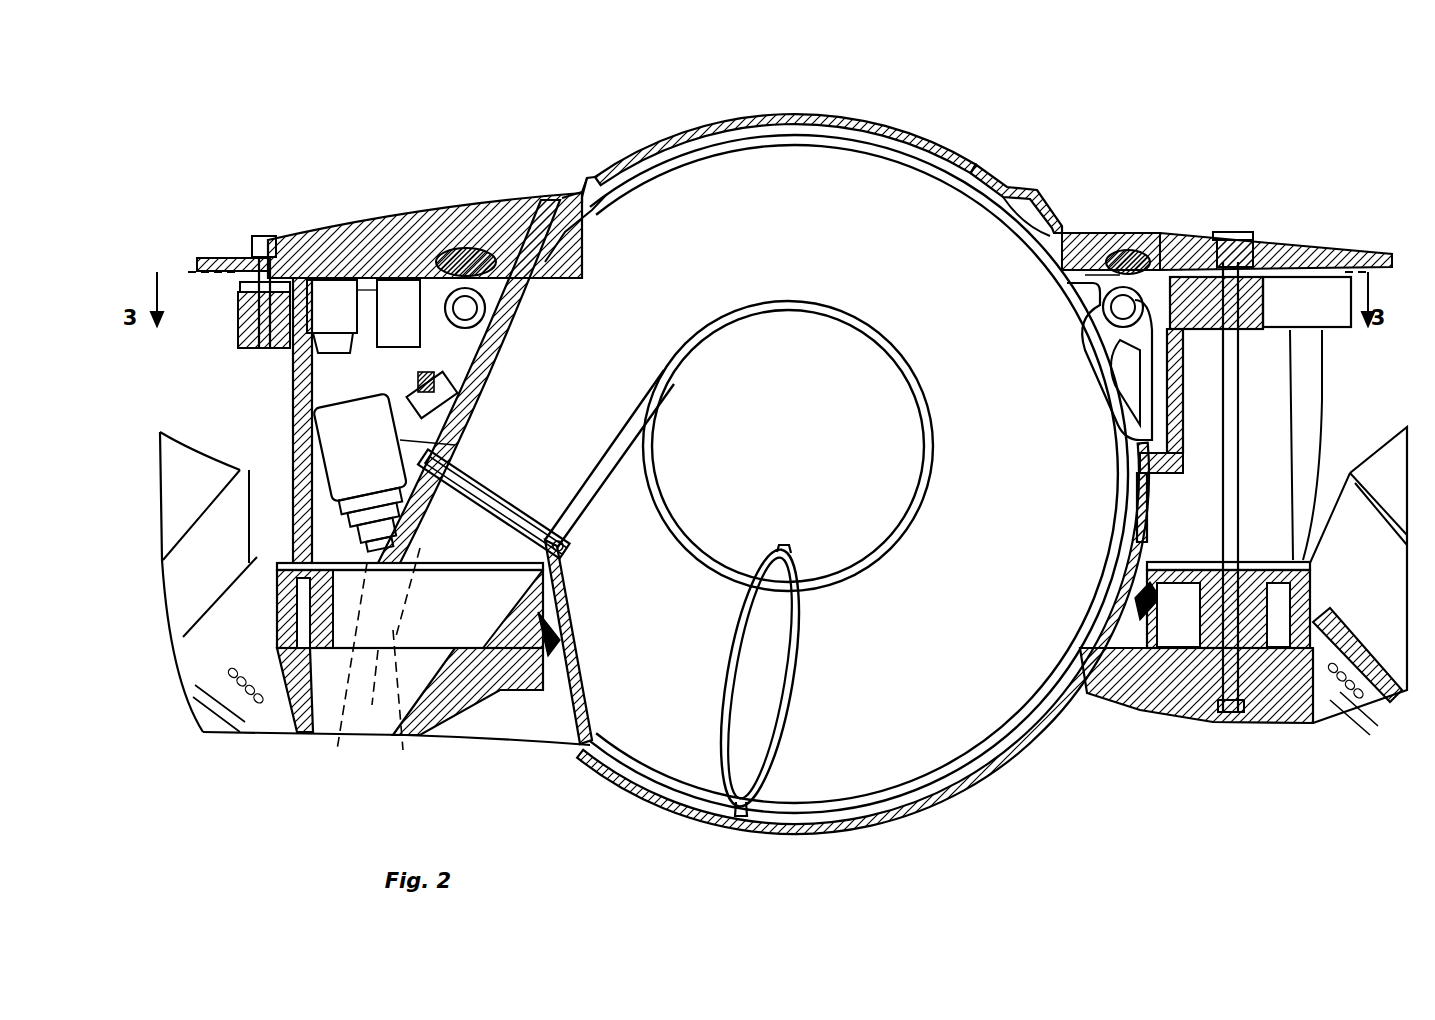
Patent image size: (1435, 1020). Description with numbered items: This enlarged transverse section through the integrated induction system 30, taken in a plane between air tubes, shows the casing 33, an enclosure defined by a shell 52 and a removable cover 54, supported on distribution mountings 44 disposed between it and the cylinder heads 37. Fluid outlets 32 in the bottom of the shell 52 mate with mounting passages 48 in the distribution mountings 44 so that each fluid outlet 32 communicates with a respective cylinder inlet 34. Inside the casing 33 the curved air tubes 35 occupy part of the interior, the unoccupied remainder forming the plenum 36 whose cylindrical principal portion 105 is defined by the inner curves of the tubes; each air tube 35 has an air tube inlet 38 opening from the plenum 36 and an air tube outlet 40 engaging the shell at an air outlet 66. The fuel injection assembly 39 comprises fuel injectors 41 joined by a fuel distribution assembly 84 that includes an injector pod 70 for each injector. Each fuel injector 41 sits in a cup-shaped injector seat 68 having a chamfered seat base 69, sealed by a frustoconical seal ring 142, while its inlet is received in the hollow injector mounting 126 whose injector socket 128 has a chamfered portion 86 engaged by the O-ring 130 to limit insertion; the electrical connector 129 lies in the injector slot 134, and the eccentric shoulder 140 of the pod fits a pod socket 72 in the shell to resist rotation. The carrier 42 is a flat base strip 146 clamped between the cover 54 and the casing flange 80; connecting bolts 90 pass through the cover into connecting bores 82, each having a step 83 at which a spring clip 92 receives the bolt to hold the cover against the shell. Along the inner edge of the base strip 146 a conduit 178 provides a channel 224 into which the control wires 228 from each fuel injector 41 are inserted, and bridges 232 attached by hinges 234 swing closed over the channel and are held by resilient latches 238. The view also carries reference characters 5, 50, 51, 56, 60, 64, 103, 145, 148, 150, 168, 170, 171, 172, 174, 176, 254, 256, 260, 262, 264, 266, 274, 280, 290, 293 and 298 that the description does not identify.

The integrated induction system 30 is at (1012, 148).
The fluid outlets 32 is at (257, 557).
The casing 33 is at (848, 118).
The cylinder inlet 34 is at (382, 772).
The air tubes 35 is at (843, 273).
The plenum 36 is at (635, 163).
The cylinder heads 37 is at (542, 746).
The air tube inlet 38 is at (740, 738).
The fuel injection assembly 39 is at (458, 335).
The air tube outlet 40 is at (455, 560).
The fuel injector 41 is at (455, 442).
The carrier 42 is at (345, 278).
The distribution mountings 44 is at (275, 604).
The mounting passages 48 is at (432, 650).
The frame 50 is at (1340, 598).
The mark 51 is at (425, 542).
The shell 52 is at (905, 832).
The cover 54 is at (940, 128).
The cover step 56 is at (966, 168).
The cover skirt 60 is at (532, 236).
The cover rim 64 is at (975, 790).
The air outlets 66 is at (420, 598).
The injector seats 68 is at (295, 450).
The seat base 69 is at (390, 545).
The injector pod 70 is at (415, 347).
The pod socket 72 is at (318, 278).
The casing flange 80 is at (272, 258).
The connecting bores 82 is at (240, 292).
The step 83 is at (240, 318).
The fuel distribution assembly 84 is at (1120, 366).
The chamfered portion 86 is at (398, 258).
The connecting bolts 90 is at (250, 244).
The spring clip 92 is at (238, 346).
The strut end 103 is at (568, 540).
The principal portion 105 is at (738, 462).
The injector mounting 126 is at (486, 305).
The injector socket 128 is at (385, 278).
The electrical connector 129 is at (460, 404).
The O-ring 130 is at (440, 385).
The injector slot 134 is at (318, 395).
The shoulder 140 is at (300, 385).
The seal ring 142 is at (300, 500).
The lead 145 is at (425, 452).
The base strip 146 is at (200, 262).
The nut 148 is at (1230, 250).
The mounting block 150 is at (302, 250).
The cover edge 168 is at (598, 196).
The arm 170 is at (1115, 422).
The wall 171 is at (1186, 456).
The lip 172 is at (1072, 320).
The flange 174 is at (1070, 266).
The seal 176 is at (456, 250).
The conduit 178 is at (1110, 258).
The channel 224 is at (478, 256).
The control wires 228 is at (492, 256).
The bridges 232 is at (1103, 320).
The hinges 234 is at (1098, 248).
The latches 238 is at (442, 258).
The tube 254 is at (472, 483).
The passage 256 is at (360, 692).
The frame wall 260 is at (1278, 626).
The hub plate 262 is at (1175, 590).
The base 264 is at (302, 737).
The web 266 is at (462, 702).
The hub bore 274 is at (272, 576).
The joint 280 is at (563, 547).
The wedge 290 is at (205, 656).
The spring fastener 293 is at (235, 742).
The bolt shank 298 is at (1240, 440).
The section line 5 is at (465, 250).